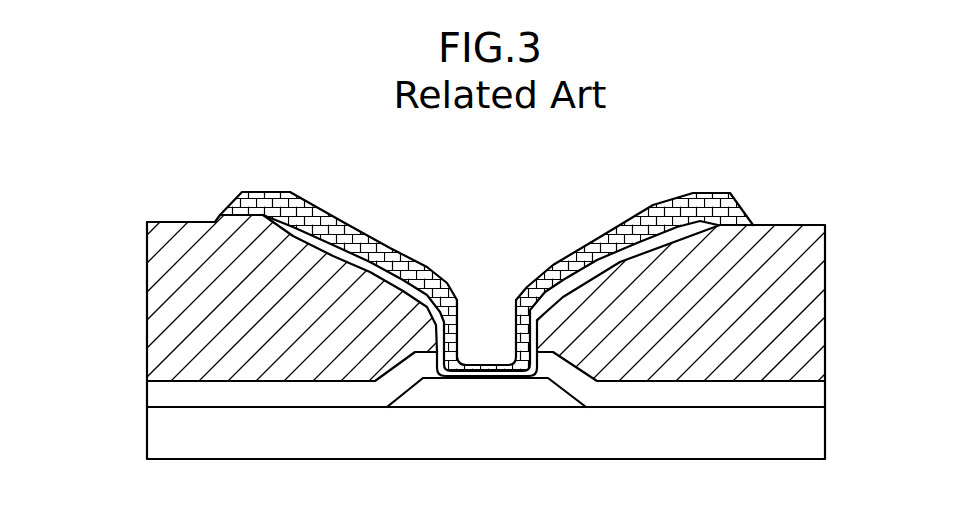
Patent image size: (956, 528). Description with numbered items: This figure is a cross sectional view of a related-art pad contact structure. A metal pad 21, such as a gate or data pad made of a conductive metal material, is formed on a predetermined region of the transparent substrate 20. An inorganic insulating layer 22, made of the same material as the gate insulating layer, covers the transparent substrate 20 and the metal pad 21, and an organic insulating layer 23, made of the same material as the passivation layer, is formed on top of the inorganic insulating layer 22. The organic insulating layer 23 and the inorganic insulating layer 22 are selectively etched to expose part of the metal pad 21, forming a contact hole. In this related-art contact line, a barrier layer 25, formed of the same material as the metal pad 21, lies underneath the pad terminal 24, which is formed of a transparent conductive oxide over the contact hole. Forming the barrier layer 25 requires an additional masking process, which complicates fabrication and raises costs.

The transparent substrate 20 is at (163, 437).
The metal pad 21 is at (482, 394).
The inorganic insulating layer 22 is at (165, 395).
The organic insulating layer 23 is at (167, 315).
The pad terminal 24 is at (580, 262).
The barrier layer 25 is at (697, 220).